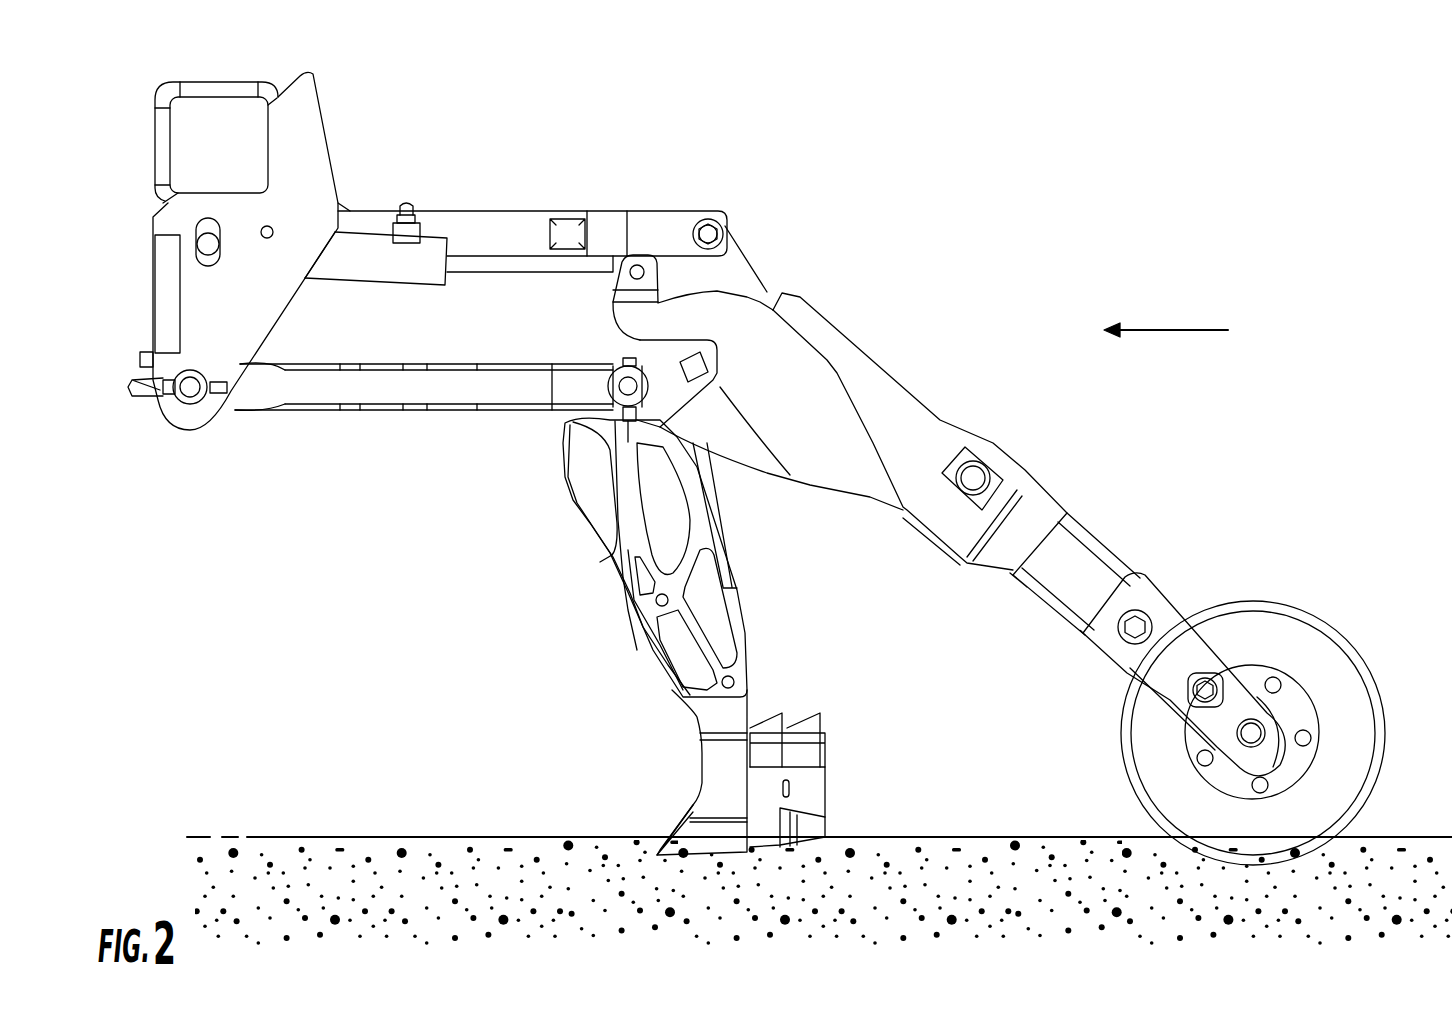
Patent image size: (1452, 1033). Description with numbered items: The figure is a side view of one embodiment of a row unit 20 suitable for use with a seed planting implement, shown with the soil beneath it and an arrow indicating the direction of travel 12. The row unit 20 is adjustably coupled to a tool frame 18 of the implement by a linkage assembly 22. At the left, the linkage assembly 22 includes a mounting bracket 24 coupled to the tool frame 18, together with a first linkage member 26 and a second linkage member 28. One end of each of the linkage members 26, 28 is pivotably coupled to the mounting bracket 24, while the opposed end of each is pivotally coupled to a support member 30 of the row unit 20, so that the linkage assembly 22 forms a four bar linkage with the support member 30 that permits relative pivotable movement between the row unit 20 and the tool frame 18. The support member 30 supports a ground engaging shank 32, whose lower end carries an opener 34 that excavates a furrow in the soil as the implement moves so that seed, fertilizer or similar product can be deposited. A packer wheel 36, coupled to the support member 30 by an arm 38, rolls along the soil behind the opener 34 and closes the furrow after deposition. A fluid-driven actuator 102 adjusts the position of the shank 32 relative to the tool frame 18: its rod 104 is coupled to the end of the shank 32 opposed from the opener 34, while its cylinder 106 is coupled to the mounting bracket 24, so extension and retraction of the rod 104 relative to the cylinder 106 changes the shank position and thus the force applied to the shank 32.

The direction of travel 12 is at (1147, 333).
The tool frame 18 is at (165, 95).
The row unit 20 is at (755, 172).
The linkage assembly 22 is at (390, 178).
The mounting bracket 24 is at (297, 133).
The first linkage member 26 is at (345, 388).
The second linkage member 28 is at (510, 215).
The support member 30 is at (847, 462).
The ground engaging shank 32 is at (697, 535).
The opener 34 is at (693, 837).
The packer wheel 36 is at (1330, 632).
The arm 38 is at (905, 398).
The fluid-driven actuator 102 is at (476, 282).
The rod 104 is at (530, 282).
The cylinder 106 is at (337, 278).